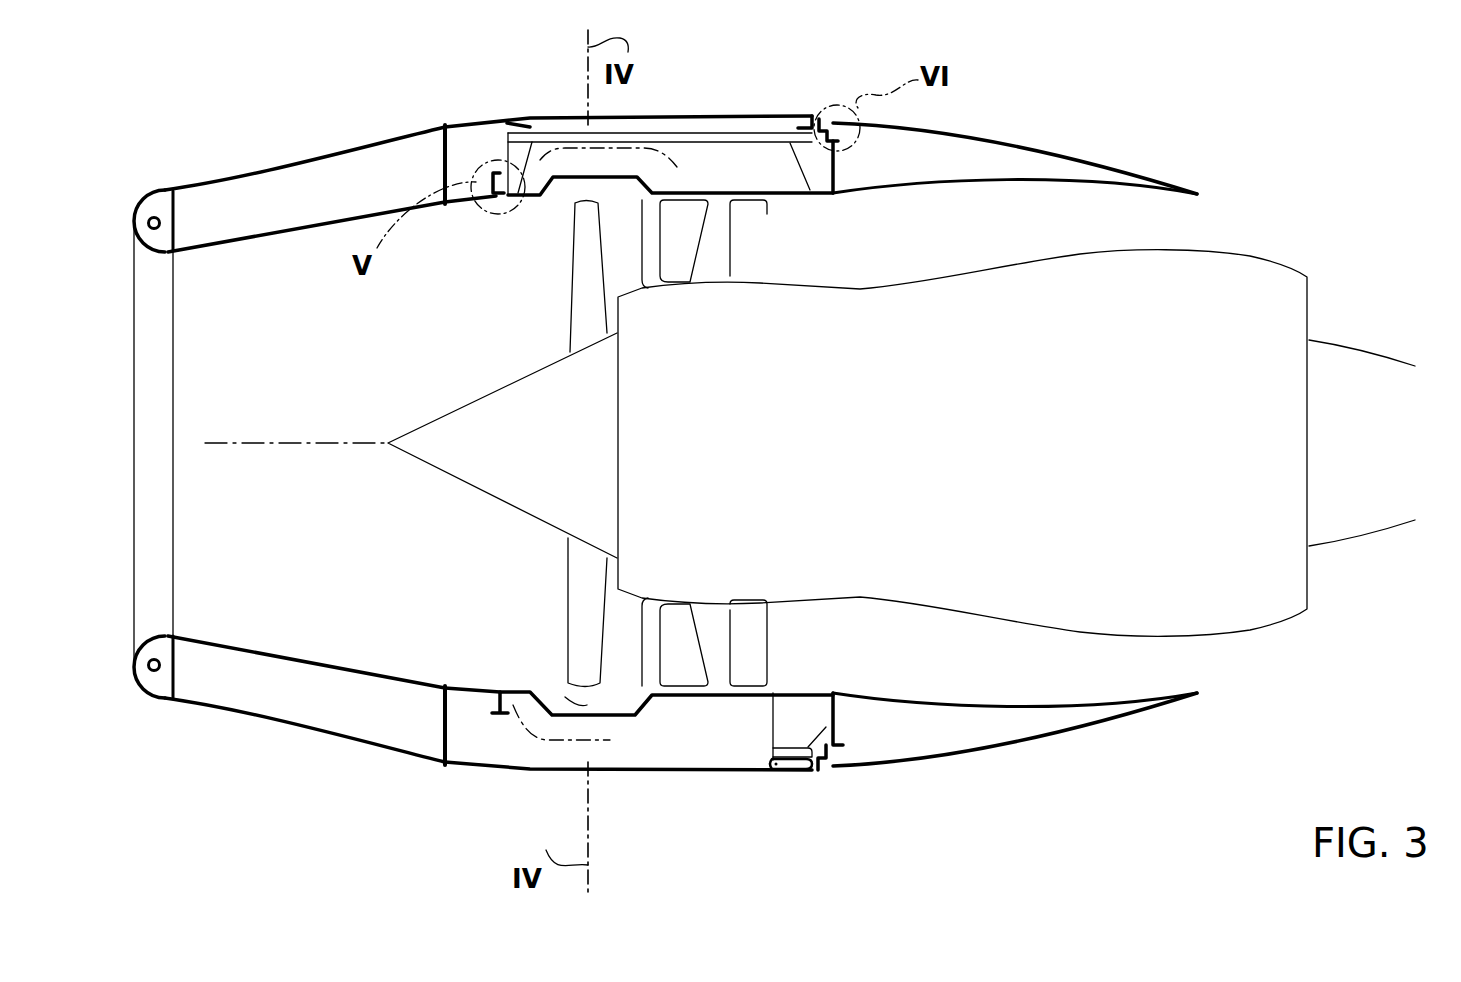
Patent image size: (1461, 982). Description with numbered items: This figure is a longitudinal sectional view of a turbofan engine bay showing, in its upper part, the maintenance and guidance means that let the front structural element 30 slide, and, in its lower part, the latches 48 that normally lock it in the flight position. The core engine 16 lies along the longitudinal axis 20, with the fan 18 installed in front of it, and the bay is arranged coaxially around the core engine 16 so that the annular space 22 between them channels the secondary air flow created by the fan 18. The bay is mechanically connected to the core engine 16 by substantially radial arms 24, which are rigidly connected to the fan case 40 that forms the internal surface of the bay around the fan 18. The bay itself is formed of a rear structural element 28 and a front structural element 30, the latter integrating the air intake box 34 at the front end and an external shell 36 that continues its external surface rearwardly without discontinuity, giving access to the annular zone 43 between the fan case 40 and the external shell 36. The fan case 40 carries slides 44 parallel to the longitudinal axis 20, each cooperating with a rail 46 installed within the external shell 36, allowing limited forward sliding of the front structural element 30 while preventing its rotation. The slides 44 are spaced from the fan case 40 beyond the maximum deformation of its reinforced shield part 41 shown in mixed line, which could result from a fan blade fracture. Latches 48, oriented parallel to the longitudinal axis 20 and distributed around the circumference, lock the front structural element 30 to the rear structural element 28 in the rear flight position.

The core engine 16 is at (1282, 266).
The fan 18 is at (583, 280).
The longitudinal axis 20 is at (246, 443).
The annular space 22 is at (1030, 665).
The arms 24 is at (650, 645).
The rear structural element 28 is at (1021, 143).
The front structural element 30 is at (267, 155).
The air intake box 34 is at (247, 722).
The external shell 36 is at (519, 771).
The fan case 40 is at (767, 214).
The reinforced part (shield) 41 is at (568, 698).
The annular zone 43 is at (697, 745).
The slides 44 is at (740, 136).
The rail 46 is at (532, 125).
The latches 48 is at (790, 771).